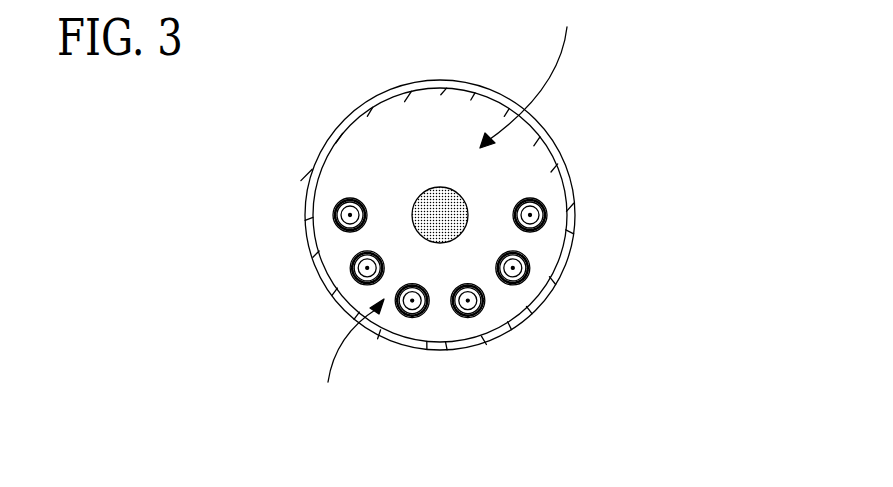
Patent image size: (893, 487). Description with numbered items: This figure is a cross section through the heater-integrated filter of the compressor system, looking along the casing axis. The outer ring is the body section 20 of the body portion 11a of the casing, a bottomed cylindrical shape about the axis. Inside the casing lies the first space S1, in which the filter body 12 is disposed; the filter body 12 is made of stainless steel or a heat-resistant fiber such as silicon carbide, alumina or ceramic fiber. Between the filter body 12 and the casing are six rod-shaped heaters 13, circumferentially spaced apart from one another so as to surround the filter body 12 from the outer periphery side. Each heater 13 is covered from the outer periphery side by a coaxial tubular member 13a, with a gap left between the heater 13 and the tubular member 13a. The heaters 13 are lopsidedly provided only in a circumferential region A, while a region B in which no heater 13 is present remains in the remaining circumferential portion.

The filter body 12 is at (457, 203).
The heater 13 is at (349, 214).
The tubular member 13a is at (359, 200).
The body section 20 is at (567, 162).
The body portion 11a is at (533, 215).
The first space S1 is at (455, 146).
The region A is at (352, 359).
The region B is at (527, 74).